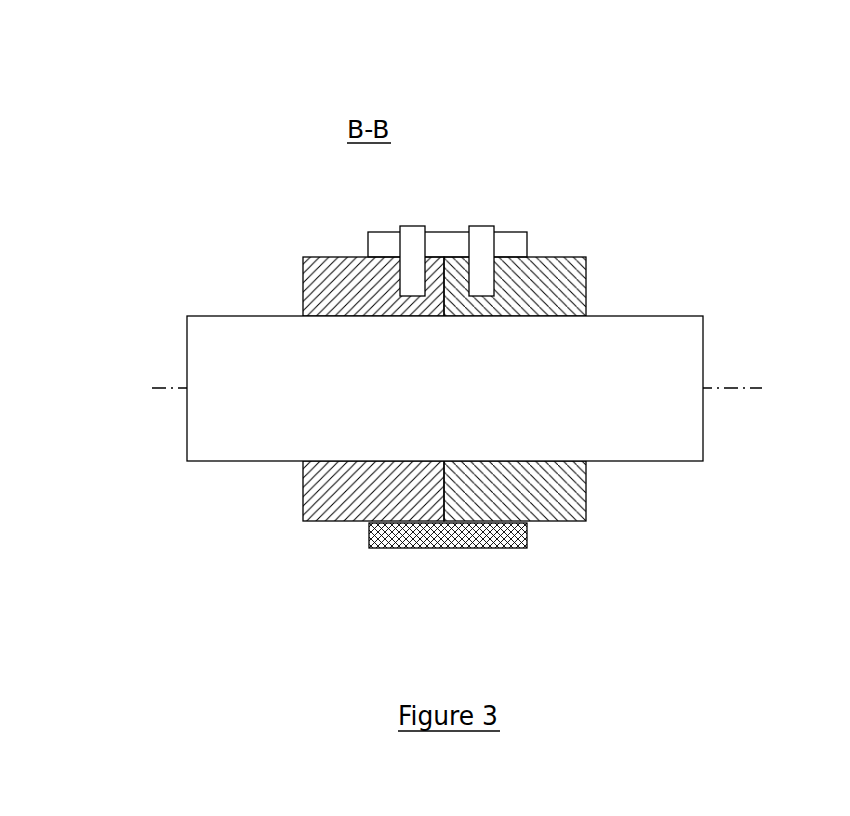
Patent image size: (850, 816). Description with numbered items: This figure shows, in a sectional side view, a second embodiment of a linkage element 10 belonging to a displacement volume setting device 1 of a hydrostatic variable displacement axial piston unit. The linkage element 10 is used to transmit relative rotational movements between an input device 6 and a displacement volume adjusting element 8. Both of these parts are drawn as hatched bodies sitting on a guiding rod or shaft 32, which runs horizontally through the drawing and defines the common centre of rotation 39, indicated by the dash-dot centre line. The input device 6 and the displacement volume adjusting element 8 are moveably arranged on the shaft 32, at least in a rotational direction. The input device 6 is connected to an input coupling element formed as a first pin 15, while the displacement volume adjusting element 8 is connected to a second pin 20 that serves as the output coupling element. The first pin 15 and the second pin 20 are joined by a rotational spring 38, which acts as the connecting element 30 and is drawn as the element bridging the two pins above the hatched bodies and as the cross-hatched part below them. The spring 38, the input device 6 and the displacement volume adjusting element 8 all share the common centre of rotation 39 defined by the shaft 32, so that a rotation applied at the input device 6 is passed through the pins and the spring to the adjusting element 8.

The linkage element 10 is at (627, 111).
The displacement volume setting device 1 is at (267, 519).
The common centre of rotation 39 is at (747, 387).
The displacement volume adjusting element 8 is at (333, 285).
The input device 6 is at (534, 282).
The guiding rod (shaft) 32 is at (658, 346).
The connecting element 30 is at (474, 384).
The rotational spring 38 is at (503, 242).
The second pin 20 is at (412, 239).
The first pin 15 is at (481, 242).